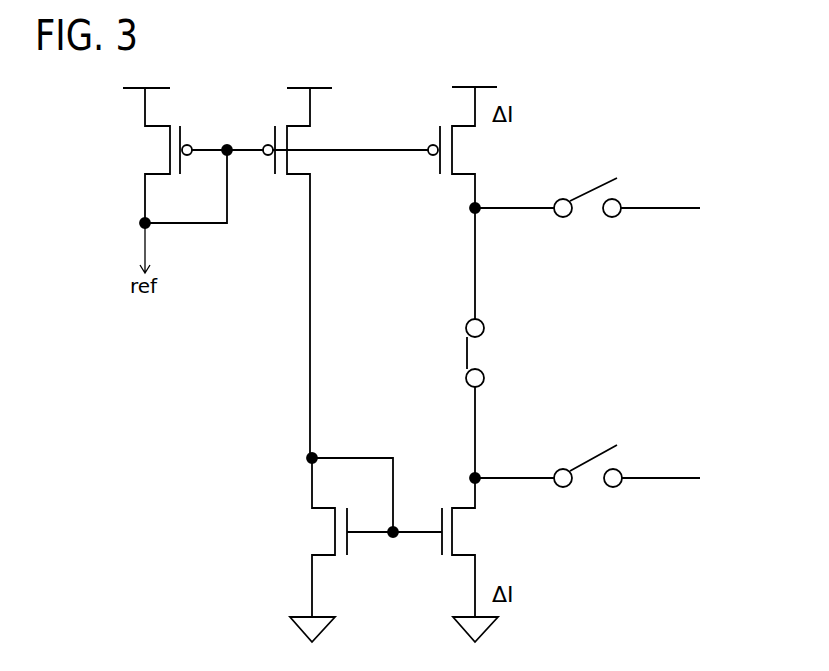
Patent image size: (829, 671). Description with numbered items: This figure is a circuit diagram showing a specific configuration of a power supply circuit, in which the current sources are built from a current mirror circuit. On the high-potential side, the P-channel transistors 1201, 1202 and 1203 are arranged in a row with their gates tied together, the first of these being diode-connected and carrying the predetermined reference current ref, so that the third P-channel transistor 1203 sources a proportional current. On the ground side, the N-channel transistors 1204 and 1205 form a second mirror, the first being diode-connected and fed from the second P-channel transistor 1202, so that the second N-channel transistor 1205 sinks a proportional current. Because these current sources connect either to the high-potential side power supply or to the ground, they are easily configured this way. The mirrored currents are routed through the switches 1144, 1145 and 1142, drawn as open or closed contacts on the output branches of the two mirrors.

The P-channel transistor 1201 is at (170, 125).
The P-channel transistor 1202 is at (287, 125).
The P-channel transistor 1203 is at (452, 125).
The N-channel transistor 1204 is at (335, 556).
The N-channel transistor 1205 is at (453, 556).
The switch 1144 is at (620, 203).
The switch 1145 is at (484, 326).
The switch 1142 is at (613, 487).